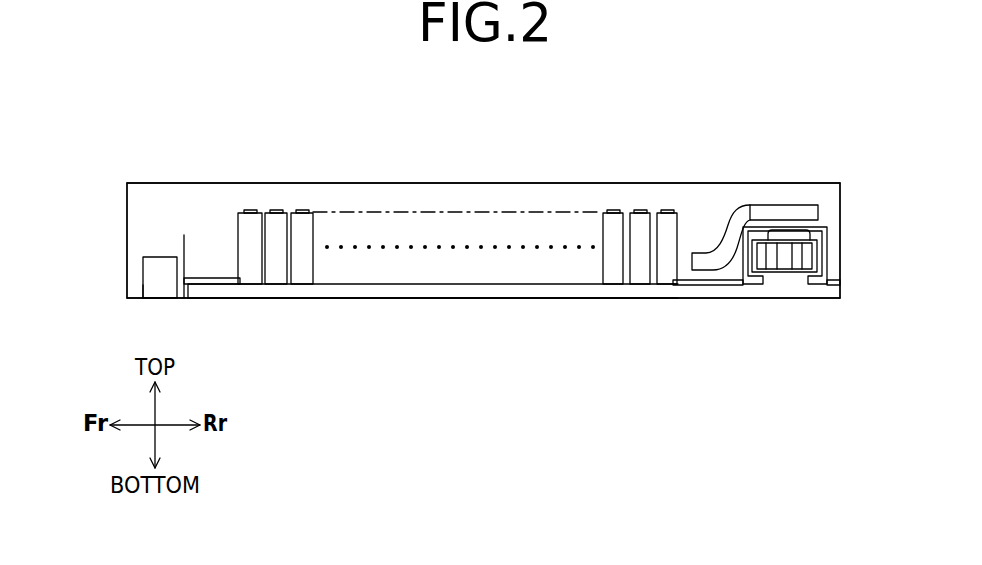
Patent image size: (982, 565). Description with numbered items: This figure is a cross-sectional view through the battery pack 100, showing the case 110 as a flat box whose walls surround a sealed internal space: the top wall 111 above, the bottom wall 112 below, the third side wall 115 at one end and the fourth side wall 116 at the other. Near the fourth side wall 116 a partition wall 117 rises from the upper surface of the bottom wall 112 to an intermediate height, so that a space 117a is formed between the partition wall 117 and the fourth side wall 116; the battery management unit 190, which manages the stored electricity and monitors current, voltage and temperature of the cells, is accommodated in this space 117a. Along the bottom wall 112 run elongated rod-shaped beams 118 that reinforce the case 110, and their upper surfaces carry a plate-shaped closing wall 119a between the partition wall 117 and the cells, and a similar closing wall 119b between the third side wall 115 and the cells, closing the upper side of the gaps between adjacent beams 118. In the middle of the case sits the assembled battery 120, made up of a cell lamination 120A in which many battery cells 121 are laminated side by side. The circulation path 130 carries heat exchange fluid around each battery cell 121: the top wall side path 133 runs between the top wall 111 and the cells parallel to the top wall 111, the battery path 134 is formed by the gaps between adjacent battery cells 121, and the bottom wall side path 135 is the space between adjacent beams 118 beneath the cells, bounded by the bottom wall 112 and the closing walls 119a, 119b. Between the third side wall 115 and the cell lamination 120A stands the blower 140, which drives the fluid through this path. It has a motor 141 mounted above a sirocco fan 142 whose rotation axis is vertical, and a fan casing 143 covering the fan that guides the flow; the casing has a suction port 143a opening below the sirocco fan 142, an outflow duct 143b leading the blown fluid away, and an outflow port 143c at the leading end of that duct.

The battery pack 100 is at (158, 183).
The case 110 is at (203, 183).
The top wall 111 is at (255, 183).
The bottom wall 112 is at (271, 298).
The third side wall 115 is at (840, 197).
The fourth side wall 116 is at (127, 206).
The partition wall 117 is at (183, 250).
The space 117a is at (135, 275).
The beams 118 is at (360, 284).
The closing wall 119a is at (214, 284).
The closing wall 119b is at (712, 281).
The assembled battery 120 is at (302, 195).
The cell lamination 120A is at (362, 210).
The battery cell 121 is at (615, 232).
The circulation path 130 is at (428, 194).
The top wall side path 133 is at (487, 198).
The battery path 134 is at (623, 230).
The bottom wall side path 135 is at (483, 292).
The blower 140 is at (770, 195).
The motor 141 is at (797, 237).
The sirocco fan 142 is at (820, 255).
The fan casing 143 is at (797, 203).
The suction port 143a is at (793, 284).
The outflow duct 143b is at (727, 262).
The outflow port 143c is at (692, 260).
The battery management unit 190 is at (143, 285).